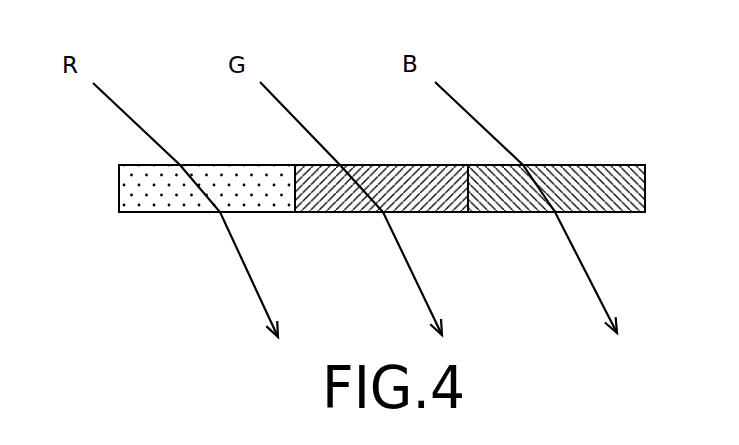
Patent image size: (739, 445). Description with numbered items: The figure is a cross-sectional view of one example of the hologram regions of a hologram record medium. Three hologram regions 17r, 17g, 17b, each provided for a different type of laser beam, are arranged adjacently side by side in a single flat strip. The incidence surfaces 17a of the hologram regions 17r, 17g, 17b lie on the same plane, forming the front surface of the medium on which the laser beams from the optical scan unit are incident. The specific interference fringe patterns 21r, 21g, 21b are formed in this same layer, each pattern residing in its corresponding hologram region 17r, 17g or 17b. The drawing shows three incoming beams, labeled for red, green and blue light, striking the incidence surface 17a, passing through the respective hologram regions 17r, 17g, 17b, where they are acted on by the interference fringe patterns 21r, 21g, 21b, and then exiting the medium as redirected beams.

The incidence surface 17a is at (602, 165).
The hologram region 17r is at (145, 213).
The hologram region 17g is at (352, 213).
The hologram region 17b is at (522, 213).
The interference fringe pattern 21r is at (191, 246).
The interference fringe pattern 21g is at (379, 246).
The interference fringe pattern 21b is at (556, 246).